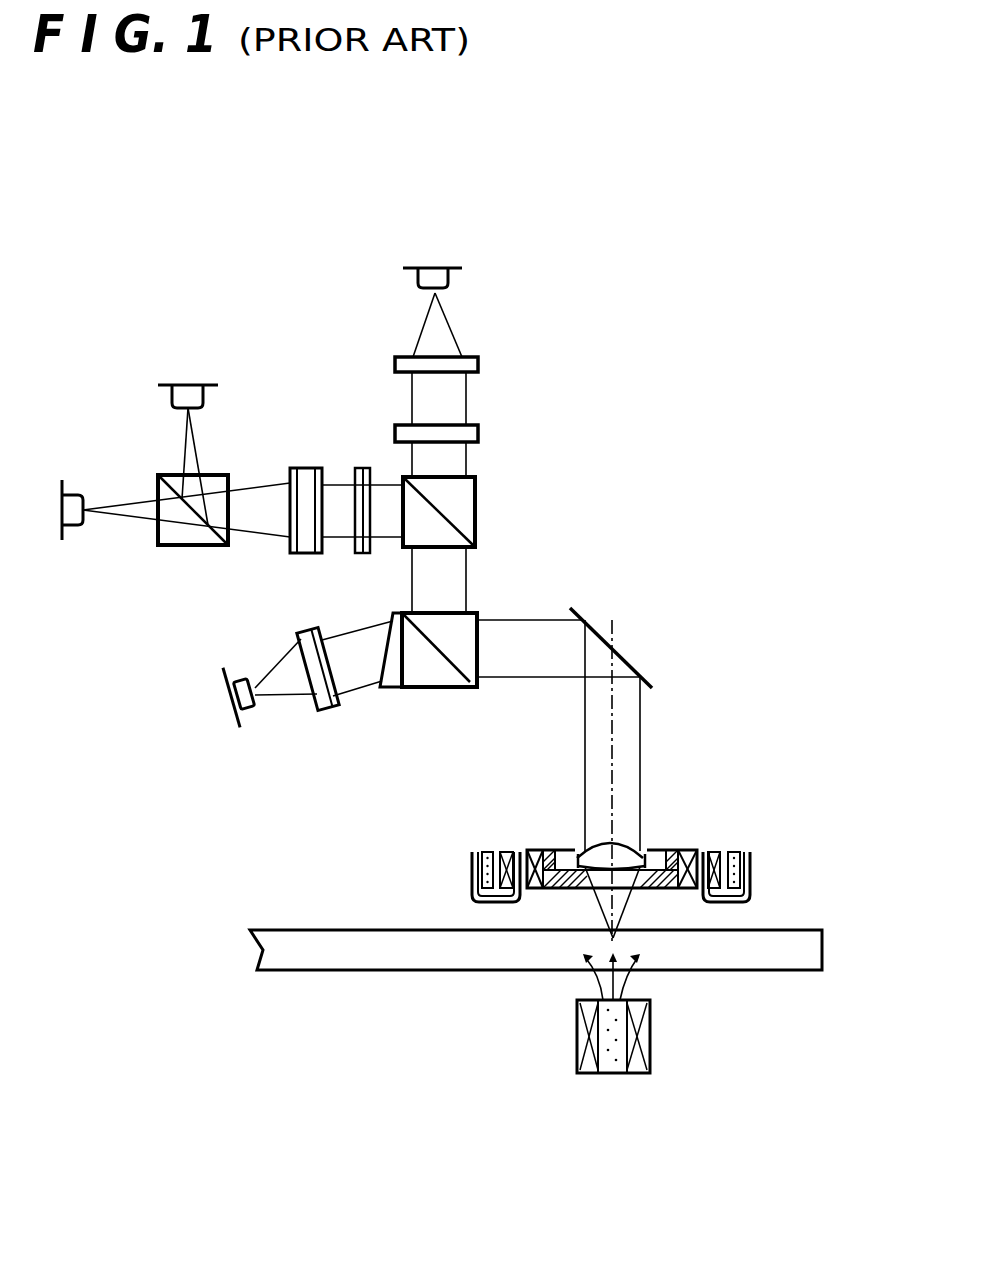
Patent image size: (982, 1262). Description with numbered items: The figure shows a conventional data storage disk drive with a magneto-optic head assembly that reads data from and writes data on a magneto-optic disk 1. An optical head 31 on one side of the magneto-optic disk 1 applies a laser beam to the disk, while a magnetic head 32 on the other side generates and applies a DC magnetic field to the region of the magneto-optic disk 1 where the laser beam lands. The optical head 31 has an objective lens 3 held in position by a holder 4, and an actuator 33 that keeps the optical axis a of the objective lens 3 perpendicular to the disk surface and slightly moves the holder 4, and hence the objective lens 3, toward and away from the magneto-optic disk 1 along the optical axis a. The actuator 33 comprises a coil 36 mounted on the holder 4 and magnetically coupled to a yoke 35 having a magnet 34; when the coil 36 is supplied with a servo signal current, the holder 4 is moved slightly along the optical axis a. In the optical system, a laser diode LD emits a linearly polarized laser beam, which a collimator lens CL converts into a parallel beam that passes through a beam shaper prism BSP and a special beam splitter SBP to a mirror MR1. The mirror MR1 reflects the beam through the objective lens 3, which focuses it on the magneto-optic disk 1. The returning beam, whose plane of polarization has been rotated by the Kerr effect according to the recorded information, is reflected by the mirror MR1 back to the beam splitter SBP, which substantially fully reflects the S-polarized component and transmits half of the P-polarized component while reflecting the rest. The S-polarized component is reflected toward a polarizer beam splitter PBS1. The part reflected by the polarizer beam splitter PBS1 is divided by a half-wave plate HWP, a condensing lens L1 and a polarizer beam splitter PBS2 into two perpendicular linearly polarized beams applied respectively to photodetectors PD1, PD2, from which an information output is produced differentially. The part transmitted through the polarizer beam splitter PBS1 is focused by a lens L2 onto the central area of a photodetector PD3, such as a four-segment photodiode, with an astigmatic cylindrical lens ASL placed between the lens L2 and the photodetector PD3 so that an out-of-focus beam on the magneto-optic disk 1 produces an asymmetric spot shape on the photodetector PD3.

The magneto-optic disk 1 is at (300, 960).
The objective lens 3 is at (622, 851).
The holder 4 is at (676, 850).
The optical head 31 is at (754, 720).
The magnetic head 32 is at (650, 1033).
The actuator 33 is at (752, 855).
The magnet 34 is at (740, 850).
The yoke 35 is at (715, 900).
The coil 36 is at (704, 890).
The optical axis a is at (612, 743).
The laser diode LD is at (228, 693).
The collimator lens CL is at (328, 707).
The special beam splitter SBP is at (428, 683).
The beam shaper prism BSP is at (395, 647).
The mirror MR1 is at (614, 653).
The polarizer beam splitter PBS1 is at (468, 515).
The half-wave plate HWP is at (363, 548).
The condensing lens L1 is at (307, 469).
The lens L2 is at (478, 436).
The astigmatic cylindrical lens ASL is at (478, 365).
The photodetector PD1 is at (200, 383).
The photodetector PD2 is at (62, 502).
The photodetector PD3 is at (448, 281).
The polarizer beam splitter PBS2 is at (176, 537).